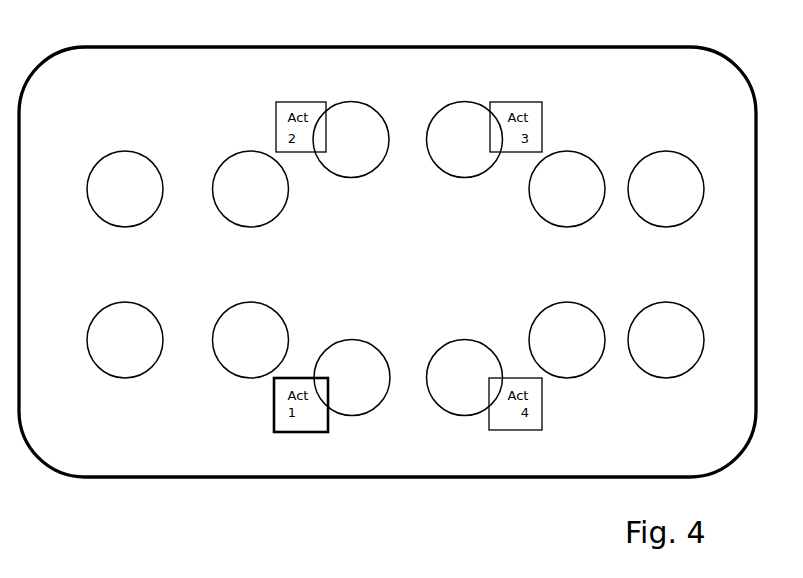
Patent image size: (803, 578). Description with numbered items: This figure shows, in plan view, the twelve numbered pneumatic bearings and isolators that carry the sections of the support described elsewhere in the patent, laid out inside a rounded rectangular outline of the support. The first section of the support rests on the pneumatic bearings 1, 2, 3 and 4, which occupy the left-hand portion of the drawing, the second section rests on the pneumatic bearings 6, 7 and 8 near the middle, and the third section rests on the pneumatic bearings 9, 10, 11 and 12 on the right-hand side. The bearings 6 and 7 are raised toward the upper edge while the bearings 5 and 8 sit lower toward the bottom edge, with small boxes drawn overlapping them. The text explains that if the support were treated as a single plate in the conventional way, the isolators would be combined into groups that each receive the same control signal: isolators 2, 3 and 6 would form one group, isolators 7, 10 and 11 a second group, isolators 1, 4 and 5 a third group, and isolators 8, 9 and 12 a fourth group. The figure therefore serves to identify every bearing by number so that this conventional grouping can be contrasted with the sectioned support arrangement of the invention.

The pneumatic bearing 1 is at (125, 340).
The pneumatic bearing 2 is at (125, 189).
The pneumatic bearing 3 is at (251, 189).
The pneumatic bearing 4 is at (251, 340).
The pneumatic bearing 5 is at (352, 378).
The pneumatic bearing 6 is at (351, 140).
The pneumatic bearing 7 is at (465, 140).
The pneumatic bearing 8 is at (465, 378).
The pneumatic bearing 9 is at (567, 340).
The pneumatic bearing 10 is at (567, 189).
The pneumatic bearing 11 is at (666, 189).
The pneumatic bearing 12 is at (666, 340).